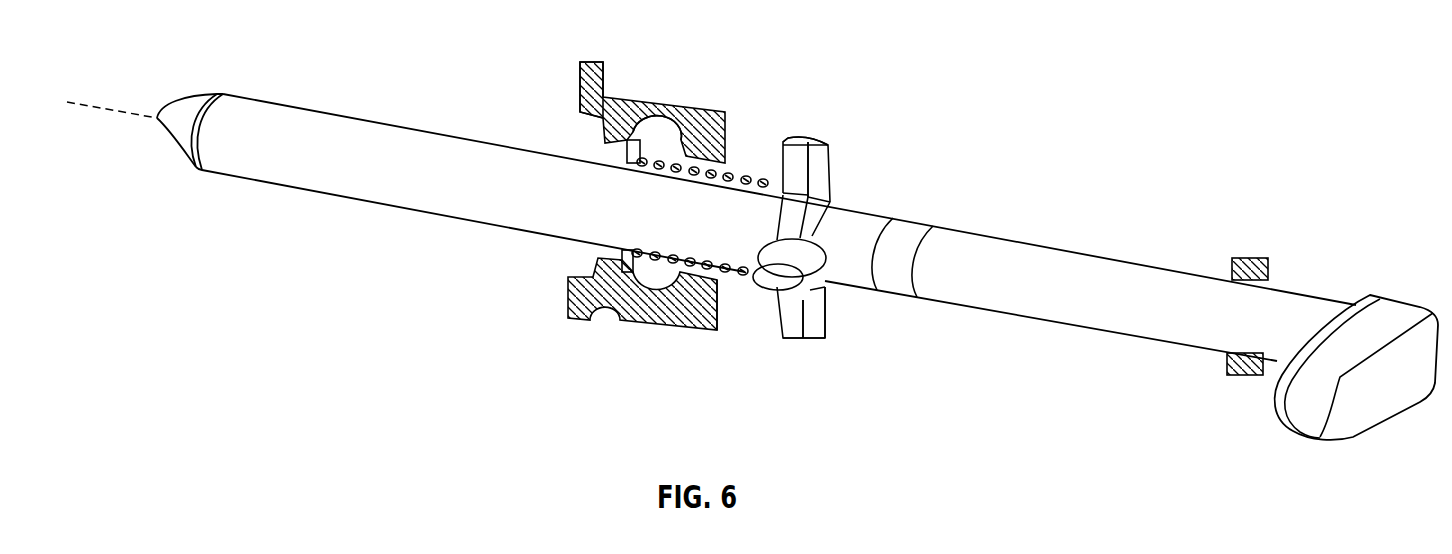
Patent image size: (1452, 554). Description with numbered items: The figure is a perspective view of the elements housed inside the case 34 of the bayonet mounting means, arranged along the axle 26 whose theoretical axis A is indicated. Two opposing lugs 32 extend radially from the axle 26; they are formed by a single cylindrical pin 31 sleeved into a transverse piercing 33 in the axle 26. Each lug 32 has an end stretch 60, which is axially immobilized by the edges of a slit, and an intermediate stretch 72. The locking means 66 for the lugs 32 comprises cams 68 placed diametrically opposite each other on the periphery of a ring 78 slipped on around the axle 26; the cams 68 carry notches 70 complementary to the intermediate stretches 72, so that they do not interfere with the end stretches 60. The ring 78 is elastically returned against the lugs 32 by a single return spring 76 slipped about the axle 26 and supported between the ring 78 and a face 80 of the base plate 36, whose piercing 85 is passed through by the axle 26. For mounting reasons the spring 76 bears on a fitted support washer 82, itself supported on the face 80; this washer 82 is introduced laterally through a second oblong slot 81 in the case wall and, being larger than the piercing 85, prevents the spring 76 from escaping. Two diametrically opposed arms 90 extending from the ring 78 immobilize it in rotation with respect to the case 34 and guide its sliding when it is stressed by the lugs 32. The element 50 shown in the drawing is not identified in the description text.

The theoretical axis A is at (118, 110).
The axle 26 is at (283, 101).
The cylindrical pin 31 is at (808, 303).
The lugs 32 is at (818, 302).
The transverse piercing 33 is at (800, 252).
The case 34 is at (602, 94).
The base plate 36 is at (579, 96).
The end cap 50 is at (1327, 440).
The end stretch 60 is at (790, 337).
The locking means 66 is at (787, 128).
The cams 68 is at (723, 275).
The notches 70 is at (745, 290).
The intermediate stretches 72 is at (790, 215).
The return spring 76 is at (688, 150).
The ring 78 is at (748, 240).
The face 80 is at (600, 258).
The second oblong slot 81 is at (658, 160).
The support washer 82 is at (640, 297).
The piercing 85 is at (627, 150).
The arms 90 is at (790, 139).